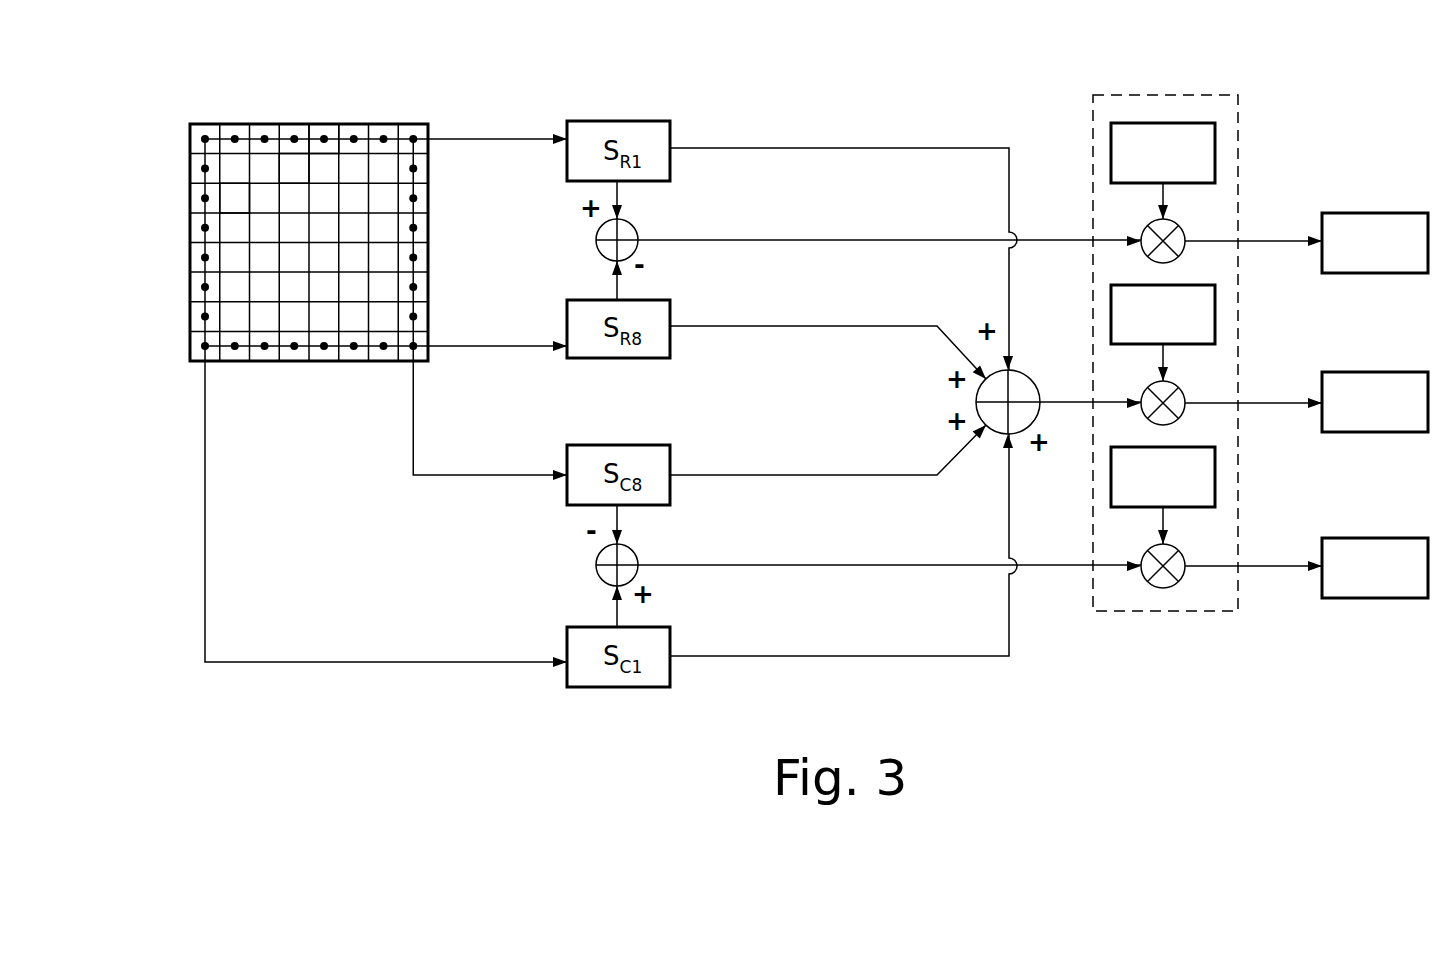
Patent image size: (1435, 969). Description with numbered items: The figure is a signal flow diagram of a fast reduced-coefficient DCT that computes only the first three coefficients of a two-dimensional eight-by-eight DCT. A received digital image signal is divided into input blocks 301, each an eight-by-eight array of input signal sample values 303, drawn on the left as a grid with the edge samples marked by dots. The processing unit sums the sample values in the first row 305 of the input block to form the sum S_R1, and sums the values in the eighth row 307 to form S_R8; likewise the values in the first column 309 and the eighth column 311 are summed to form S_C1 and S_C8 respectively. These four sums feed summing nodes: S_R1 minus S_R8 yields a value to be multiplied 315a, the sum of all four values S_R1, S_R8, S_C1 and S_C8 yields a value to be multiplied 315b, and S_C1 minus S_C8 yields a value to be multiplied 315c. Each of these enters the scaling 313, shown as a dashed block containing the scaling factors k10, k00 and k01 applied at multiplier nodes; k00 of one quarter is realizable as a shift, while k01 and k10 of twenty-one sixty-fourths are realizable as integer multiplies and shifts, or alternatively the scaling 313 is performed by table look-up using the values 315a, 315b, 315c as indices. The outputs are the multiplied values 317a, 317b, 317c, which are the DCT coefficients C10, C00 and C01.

The input block 301 is at (387, 124).
The input signal sample values 303 is at (240, 198).
The first row 305 is at (178, 136).
The eighth row 307 is at (168, 346).
The first column 309 is at (204, 108).
The eighth column 311 is at (413, 108).
The scaling 313 is at (1238, 132).
The value to be multiplied 315a is at (1052, 240).
The value to be multiplied 315b is at (1056, 402).
The value to be multiplied 315c is at (1038, 567).
The multiplied value 317a is at (1280, 240).
The multiplied value 317b is at (1270, 402).
The multiplied value 317c is at (1268, 566).